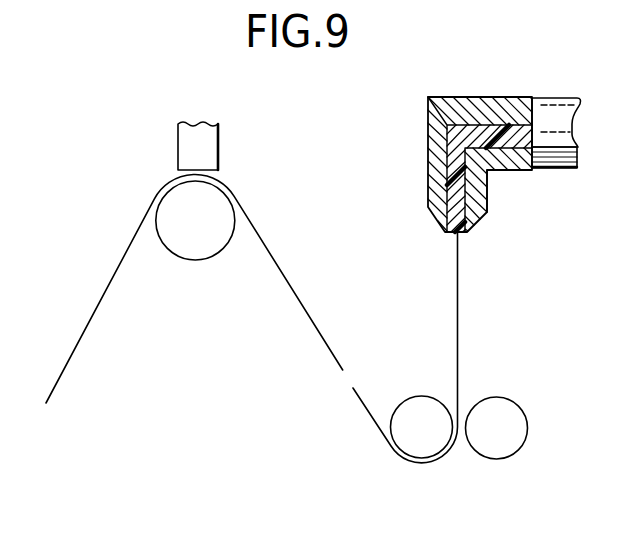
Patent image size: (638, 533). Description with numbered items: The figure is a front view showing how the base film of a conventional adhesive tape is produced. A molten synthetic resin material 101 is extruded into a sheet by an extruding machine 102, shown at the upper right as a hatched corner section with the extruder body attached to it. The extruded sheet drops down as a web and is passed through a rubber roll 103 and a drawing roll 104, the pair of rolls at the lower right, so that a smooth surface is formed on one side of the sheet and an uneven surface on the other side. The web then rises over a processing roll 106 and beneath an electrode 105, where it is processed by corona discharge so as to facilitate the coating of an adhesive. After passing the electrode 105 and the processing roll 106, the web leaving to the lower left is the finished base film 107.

The molten synthetic resin material 101 is at (453, 173).
The extruding machine 102 is at (523, 96).
The rubber roll 103 is at (420, 413).
The drawing roll 104 is at (493, 417).
The electrode 105 is at (192, 148).
The processing roll 106 is at (190, 236).
The base film 107 is at (83, 333).